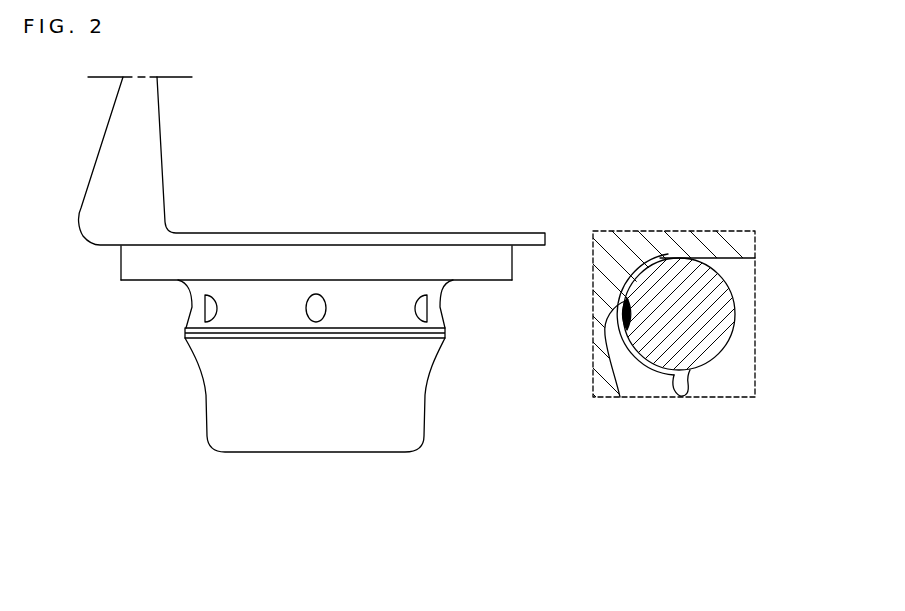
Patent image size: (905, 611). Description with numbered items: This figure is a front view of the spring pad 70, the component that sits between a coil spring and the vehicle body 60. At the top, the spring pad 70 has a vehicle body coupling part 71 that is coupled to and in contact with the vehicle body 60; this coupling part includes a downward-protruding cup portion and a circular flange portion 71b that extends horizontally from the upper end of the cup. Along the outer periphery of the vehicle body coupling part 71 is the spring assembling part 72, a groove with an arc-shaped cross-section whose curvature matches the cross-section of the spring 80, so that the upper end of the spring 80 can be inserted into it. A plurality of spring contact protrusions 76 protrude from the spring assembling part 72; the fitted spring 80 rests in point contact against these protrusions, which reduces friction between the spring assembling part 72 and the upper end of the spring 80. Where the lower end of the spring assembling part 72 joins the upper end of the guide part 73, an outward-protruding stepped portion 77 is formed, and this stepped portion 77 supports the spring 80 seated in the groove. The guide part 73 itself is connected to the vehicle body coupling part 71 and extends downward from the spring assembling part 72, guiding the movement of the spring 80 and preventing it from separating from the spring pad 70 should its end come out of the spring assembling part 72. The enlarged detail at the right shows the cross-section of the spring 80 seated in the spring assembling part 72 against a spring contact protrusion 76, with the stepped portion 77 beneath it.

The vehicle body 60 is at (148, 136).
The spring pad 70 is at (203, 452).
The vehicle body coupling part 71 is at (468, 297).
The circular flange portion 71b is at (299, 262).
The spring assembling part 72 is at (372, 300).
The guide part 73 is at (342, 417).
The spring contact protrusions 76 is at (305, 306).
The stepped portion 77 is at (185, 333).
The spring 80 is at (707, 313).